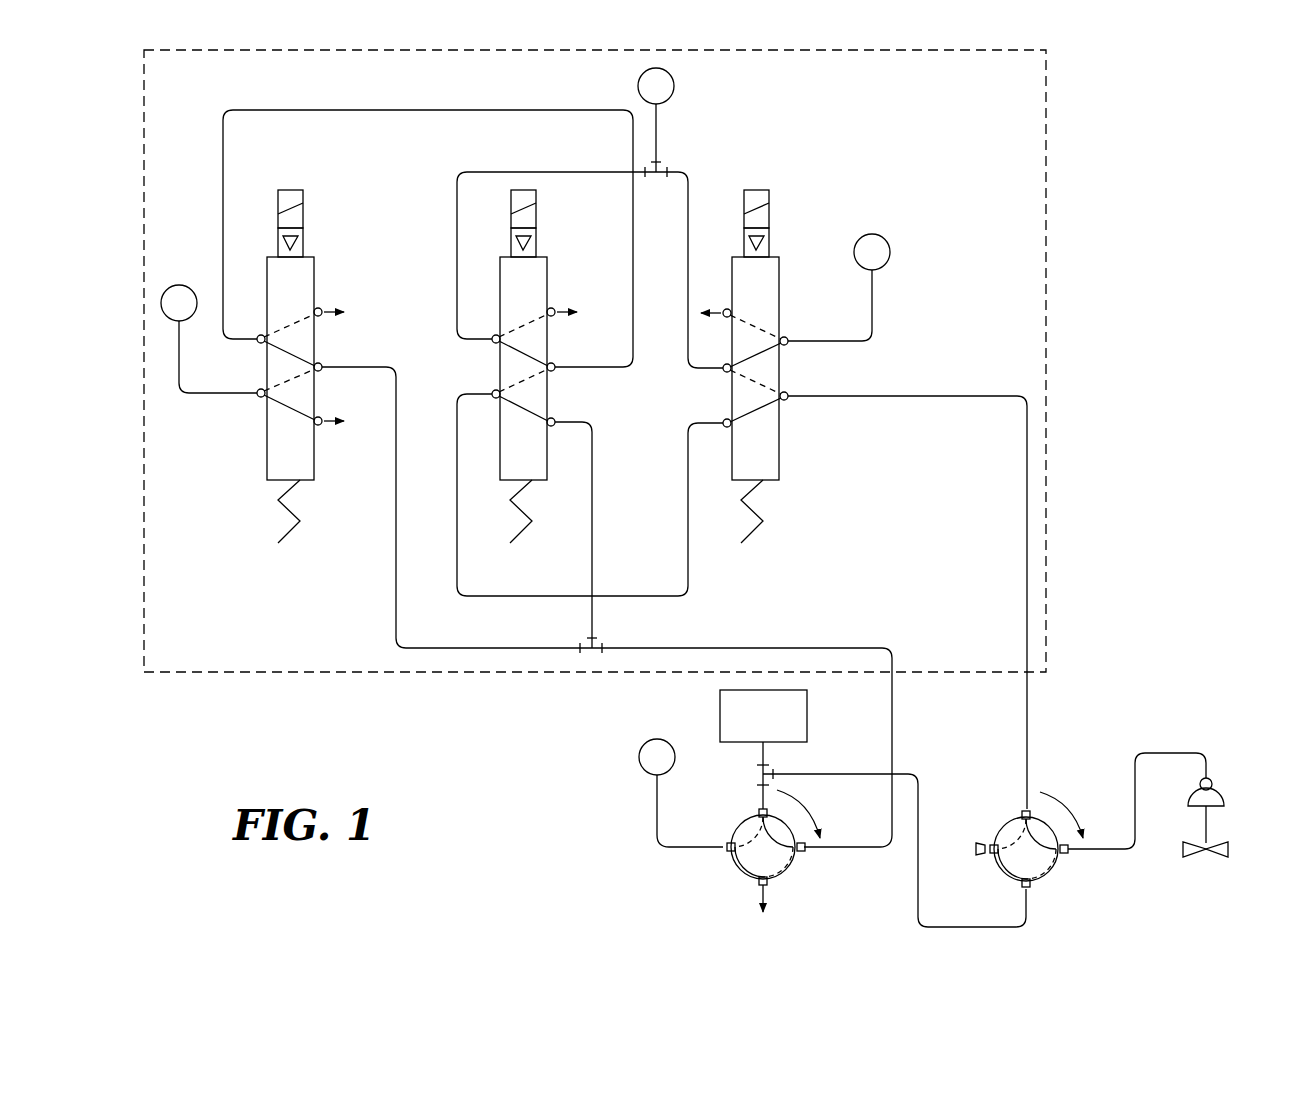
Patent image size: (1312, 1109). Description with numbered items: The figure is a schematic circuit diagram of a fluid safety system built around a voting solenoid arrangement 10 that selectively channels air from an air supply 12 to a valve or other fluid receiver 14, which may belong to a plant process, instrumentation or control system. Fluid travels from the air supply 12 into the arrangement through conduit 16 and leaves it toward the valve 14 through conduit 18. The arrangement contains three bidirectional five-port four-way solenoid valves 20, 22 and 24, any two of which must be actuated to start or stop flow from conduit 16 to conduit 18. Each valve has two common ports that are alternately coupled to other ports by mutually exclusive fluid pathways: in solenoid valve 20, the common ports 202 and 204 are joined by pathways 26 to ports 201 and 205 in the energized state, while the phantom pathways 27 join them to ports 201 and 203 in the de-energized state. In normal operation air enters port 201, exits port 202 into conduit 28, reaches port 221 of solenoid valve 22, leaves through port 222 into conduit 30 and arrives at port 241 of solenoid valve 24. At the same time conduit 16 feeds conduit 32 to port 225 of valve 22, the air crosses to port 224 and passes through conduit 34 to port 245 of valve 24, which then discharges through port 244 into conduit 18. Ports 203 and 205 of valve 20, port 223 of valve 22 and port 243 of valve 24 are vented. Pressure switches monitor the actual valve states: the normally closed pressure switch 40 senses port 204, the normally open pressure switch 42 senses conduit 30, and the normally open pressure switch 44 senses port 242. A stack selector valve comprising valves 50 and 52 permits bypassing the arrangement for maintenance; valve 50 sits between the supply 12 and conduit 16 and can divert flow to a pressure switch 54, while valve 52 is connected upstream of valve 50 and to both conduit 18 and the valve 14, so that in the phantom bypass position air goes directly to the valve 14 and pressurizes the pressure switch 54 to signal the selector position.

The voting solenoid arrangement 10 is at (1046, 207).
The air supply 12 is at (720, 716).
The valve 14 is at (1229, 849).
The conduit 16 is at (892, 735).
The conduit 18 is at (1028, 733).
The solenoid valve 20 is at (314, 270).
The solenoid valve 22 is at (547, 270).
The solenoid valve 24 is at (779, 270).
The fluid pathways 26 is at (290, 352).
The fluid pathways 27 is at (290, 325).
The conduit 28 is at (425, 110).
The conduit 30 is at (457, 250).
The conduit 32 is at (592, 510).
The conduit 34 is at (688, 590).
The pressure switch 40 is at (180, 285).
The pressure switch 42 is at (675, 81).
The pressure switch 44 is at (891, 251).
The valve 50 is at (790, 868).
The valve 52 is at (1052, 870).
The pressure switch 54 is at (638, 757).
The port 201 is at (320, 364).
The common port 202 is at (258, 341).
The port 203 is at (320, 309).
The common port 204 is at (258, 395).
The port 205 is at (320, 424).
The port 221 is at (553, 370).
The port 222 is at (493, 341).
The port 223 is at (553, 315).
The port 224 is at (495, 398).
The port 225 is at (553, 426).
The port 241 is at (724, 370).
The port 242 is at (786, 344).
The port 243 is at (724, 316).
The port 244 is at (786, 399).
The port 245 is at (726, 427).